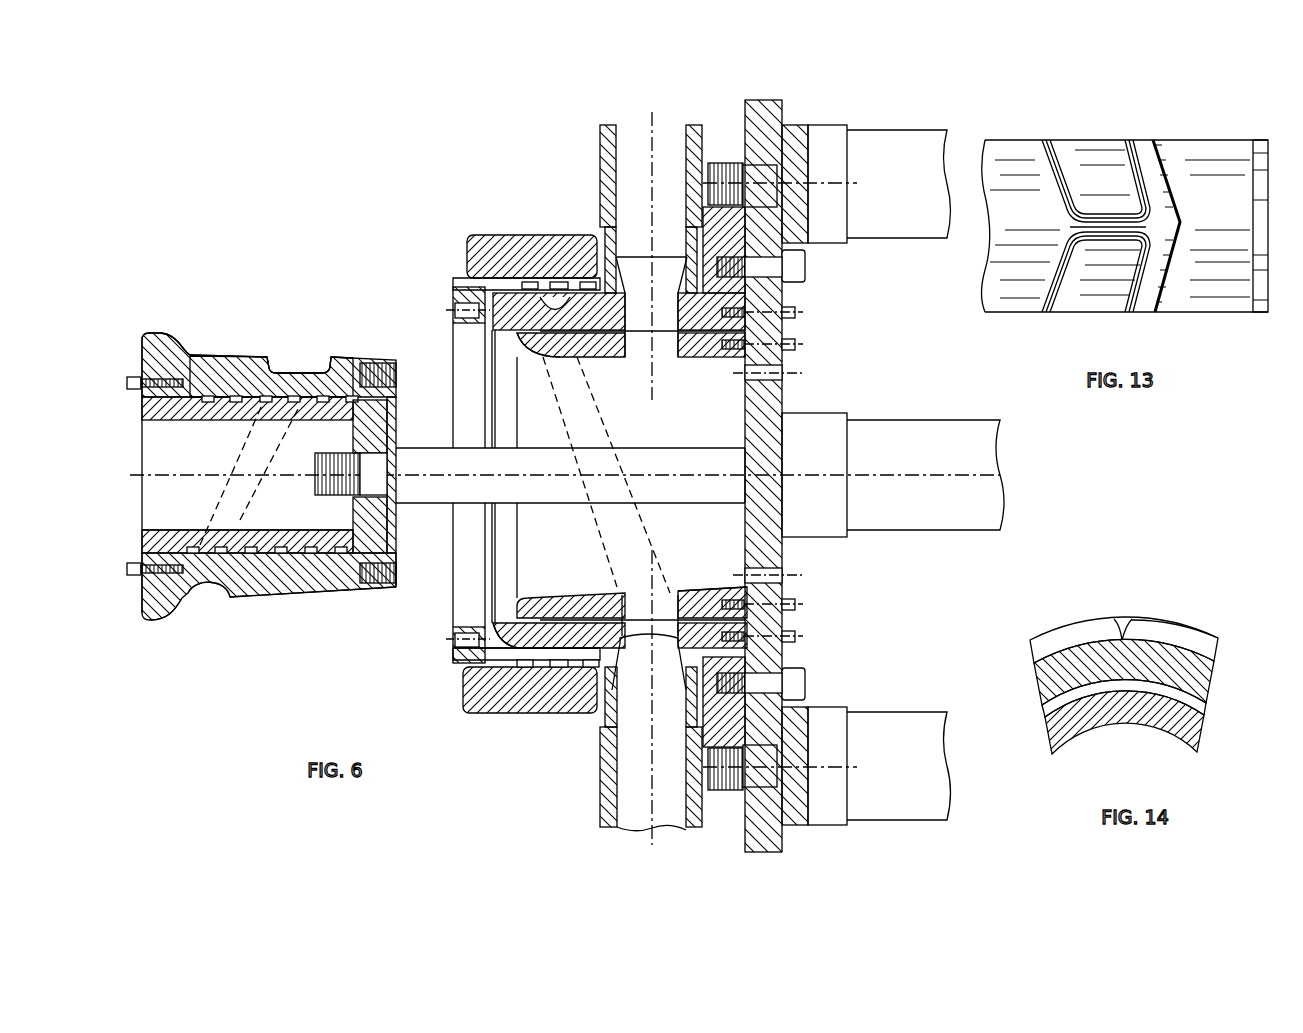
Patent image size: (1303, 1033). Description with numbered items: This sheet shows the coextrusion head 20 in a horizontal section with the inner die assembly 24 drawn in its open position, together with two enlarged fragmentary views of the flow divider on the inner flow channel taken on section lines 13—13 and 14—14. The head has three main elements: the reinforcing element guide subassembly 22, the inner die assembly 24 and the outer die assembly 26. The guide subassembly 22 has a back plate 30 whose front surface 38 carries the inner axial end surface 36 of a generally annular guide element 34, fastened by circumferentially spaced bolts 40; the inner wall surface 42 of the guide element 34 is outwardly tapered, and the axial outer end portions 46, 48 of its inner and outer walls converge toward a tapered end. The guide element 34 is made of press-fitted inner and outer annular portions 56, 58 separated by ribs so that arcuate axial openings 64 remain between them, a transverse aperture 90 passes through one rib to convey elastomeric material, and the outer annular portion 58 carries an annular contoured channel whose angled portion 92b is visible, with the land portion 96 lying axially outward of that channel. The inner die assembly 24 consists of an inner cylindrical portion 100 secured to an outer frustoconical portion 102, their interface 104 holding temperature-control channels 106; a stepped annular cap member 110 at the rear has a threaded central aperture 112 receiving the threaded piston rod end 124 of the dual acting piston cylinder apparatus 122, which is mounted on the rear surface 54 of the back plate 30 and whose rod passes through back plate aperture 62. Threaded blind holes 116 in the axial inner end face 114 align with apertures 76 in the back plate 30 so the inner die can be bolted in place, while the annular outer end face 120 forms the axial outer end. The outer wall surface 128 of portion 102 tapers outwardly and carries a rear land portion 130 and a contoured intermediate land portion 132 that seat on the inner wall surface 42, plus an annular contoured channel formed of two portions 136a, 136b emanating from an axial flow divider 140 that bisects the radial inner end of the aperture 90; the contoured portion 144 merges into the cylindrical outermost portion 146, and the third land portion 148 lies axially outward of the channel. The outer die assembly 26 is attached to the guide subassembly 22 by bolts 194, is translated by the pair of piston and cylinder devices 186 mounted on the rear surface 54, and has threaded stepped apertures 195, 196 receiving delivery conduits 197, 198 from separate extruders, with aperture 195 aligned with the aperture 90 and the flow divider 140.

In FIG. 6, the coextrusion head 20 is at (242, 202).
In FIG. 6, the reinforcing element guide subassembly 22 is at (647, 440).
In FIG. 6, the inner die assembly 24 is at (165, 470).
In FIG. 6, the outer die assembly 26 is at (502, 235).
In FIG. 6, the back plate 30 is at (766, 100).
In FIG. 6, the annular guide element 34 is at (706, 362).
In FIG. 6, the inner axial end surface 36 is at (748, 302).
In FIG. 6, the back plate front surface 38 is at (745, 165).
In FIG. 6, the bolts 40 is at (797, 313).
In FIG. 6, the inner wall surface 42 is at (596, 347).
In FIG. 6, the axial outer end portion 46 is at (521, 344).
In FIG. 6, the axial outer end portion 48 is at (547, 630).
In FIG. 6, the rear surface 54 is at (784, 120).
In FIG. 6, the inner annular portion 56 is at (703, 592).
In FIG. 6, the outer annular portion 58 is at (597, 633).
In FIG. 6, the back plate aperture 62 is at (752, 446).
In FIG. 6, the arcuate axial openings 64 is at (672, 600).
In FIG. 6, the apertures 76 is at (787, 373).
In FIG. 6, the transverse bore or aperture 90 is at (661, 345).
In FIG. 6, the channel portion 92b is at (620, 519).
In FIG. 6, the land portion 96 is at (570, 650).
In FIG. 6, the inner cylindrical portion 100 is at (186, 410).
In FIG. 14, the inner cylindrical portion 100 is at (1125, 712).
In FIG. 6, the outer frustoconical portion 102 is at (196, 355).
In FIG. 14, the outer frustoconical portion 102 is at (1200, 672).
In FIG. 6, the interface 104 is at (183, 550).
In FIG. 6, the channels 106 is at (244, 410).
In FIG. 14, the channels 106 is at (1200, 706).
In FIG. 6, the stepped annular cap member 110 is at (388, 424).
In FIG. 6, the threaded central aperture 112 is at (356, 498).
In FIG. 6, the axial inner end face 114 is at (390, 532).
In FIG. 6, the threaded blind holes 116 is at (397, 576).
In FIG. 6, the annular outer end face 120 is at (141, 358).
In FIG. 6, the piston cylinder apparatus 122 is at (797, 468).
In FIG. 6, the threaded distal piston rod end 124 is at (473, 475).
In FIG. 6, the outer wall surface 128 is at (280, 596).
In FIG. 6, the rear land portion 130 is at (386, 590).
In FIG. 13, the rear land portion 130 is at (1261, 152).
In FIG. 6, the intermediate contoured land portion 132 is at (330, 360).
In FIG. 13, the intermediate contoured land portion 132 is at (1170, 214).
In FIG. 13, the channel portion 136a is at (1094, 292).
In FIG. 14, the channel portion 136a is at (1180, 636).
In FIG. 6, the channel portion 136b is at (243, 498).
In FIG. 13, the channel portion 136b is at (1108, 155).
In FIG. 14, the channel portion 136b is at (1066, 636).
In FIG. 6, the axial flow divider 140 is at (302, 364).
In FIG. 13, the axial flow divider 140 is at (1113, 224).
In FIG. 14, the axial flow divider 140 is at (1126, 623).
In FIG. 6, the tapered or contoured portion 144 is at (170, 343).
In FIG. 6, the cylindrical portion 146 is at (155, 334).
In FIG. 6, the outer land portion 148 is at (250, 357).
In FIG. 13, the outer land portion 148 is at (998, 220).
In FIG. 6, the piston and cylinder devices 186 is at (832, 162).
In FIG. 6, the bolts 194 is at (797, 262).
In FIG. 6, the threaded stepped aperture 195 is at (636, 293).
In FIG. 6, the threaded stepped aperture 196 is at (638, 653).
In FIG. 6, the delivery conduit 197 is at (600, 162).
In FIG. 6, the delivery conduit 198 is at (600, 805).
In FIG. 6, the section line 13— 13 is at (225, 360).
In FIG. 6, the section line 14— 14 is at (274, 318).